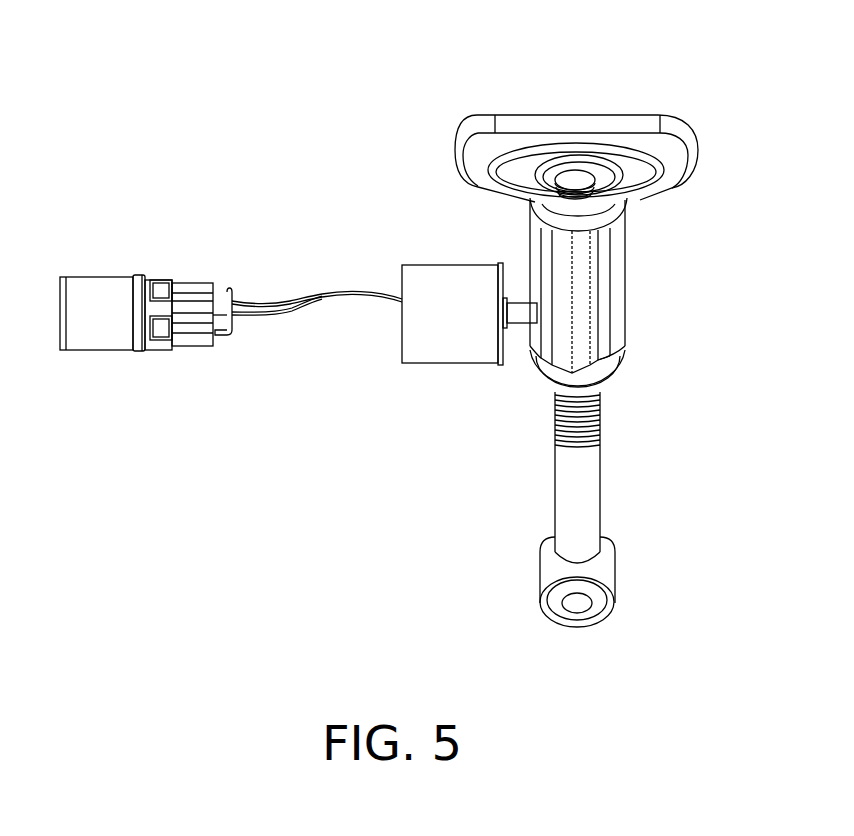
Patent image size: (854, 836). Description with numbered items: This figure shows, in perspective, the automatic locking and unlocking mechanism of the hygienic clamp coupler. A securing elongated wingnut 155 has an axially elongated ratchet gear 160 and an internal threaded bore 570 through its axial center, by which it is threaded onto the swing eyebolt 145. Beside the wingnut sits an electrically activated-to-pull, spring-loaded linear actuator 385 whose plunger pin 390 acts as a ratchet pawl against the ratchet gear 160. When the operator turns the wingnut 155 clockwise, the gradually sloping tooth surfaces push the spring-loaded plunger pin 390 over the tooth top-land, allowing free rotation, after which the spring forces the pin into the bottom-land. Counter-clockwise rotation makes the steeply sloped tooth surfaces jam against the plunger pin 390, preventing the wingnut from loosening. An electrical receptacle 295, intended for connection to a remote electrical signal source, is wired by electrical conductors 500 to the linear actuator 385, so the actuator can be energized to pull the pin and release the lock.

The swing eyebolt 145 is at (583, 492).
The securing elongated wingnut 155 is at (668, 172).
The ratchet gear 160 is at (595, 330).
The electrical receptacle 295 is at (115, 325).
The linear actuator 385 is at (424, 328).
The plunger pin 390 is at (513, 313).
The electrical conductors 500 is at (303, 303).
The internal threaded bore 570 is at (574, 184).